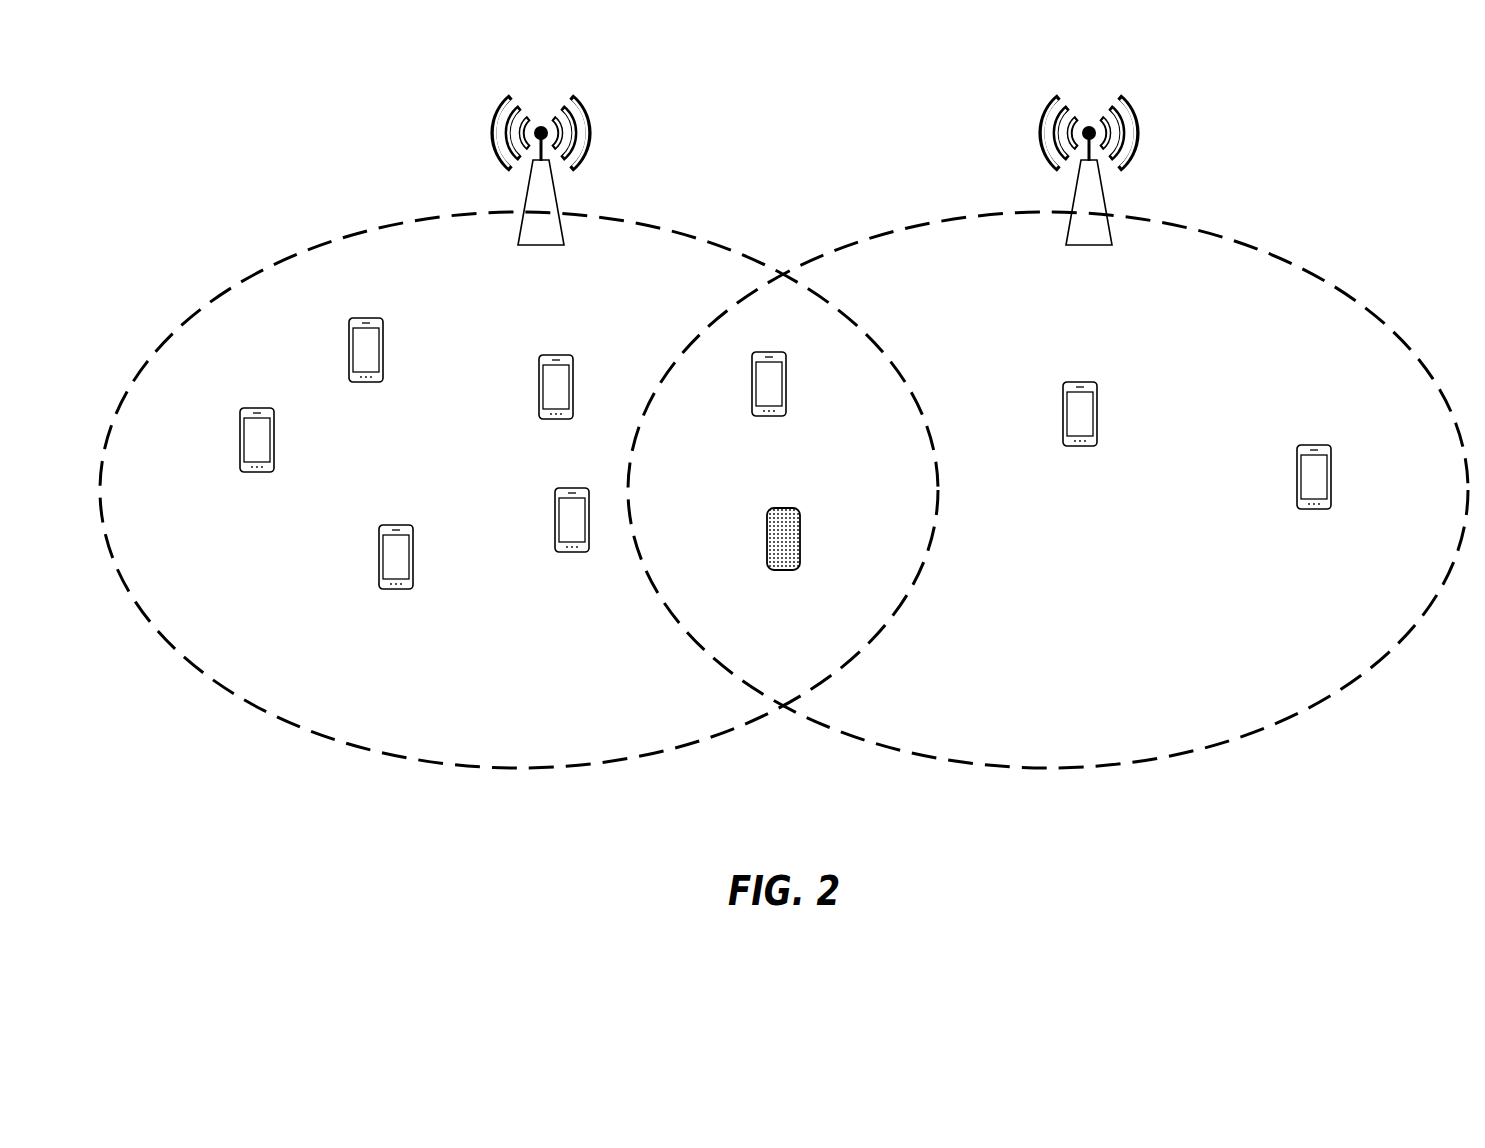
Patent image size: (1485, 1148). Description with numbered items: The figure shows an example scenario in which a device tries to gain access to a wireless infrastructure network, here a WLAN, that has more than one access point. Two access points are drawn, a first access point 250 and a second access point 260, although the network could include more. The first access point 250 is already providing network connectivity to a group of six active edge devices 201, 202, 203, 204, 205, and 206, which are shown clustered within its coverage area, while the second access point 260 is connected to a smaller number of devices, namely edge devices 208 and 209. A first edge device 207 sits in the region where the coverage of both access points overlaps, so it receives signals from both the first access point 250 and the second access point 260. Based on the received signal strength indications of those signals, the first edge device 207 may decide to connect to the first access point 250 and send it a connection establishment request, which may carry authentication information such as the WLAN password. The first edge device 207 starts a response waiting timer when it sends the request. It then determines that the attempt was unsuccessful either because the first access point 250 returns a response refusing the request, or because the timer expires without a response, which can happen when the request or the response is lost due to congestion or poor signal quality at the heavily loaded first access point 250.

The edge device 201 is at (256, 474).
The edge device 202 is at (351, 351).
The edge device 203 is at (540, 393).
The edge device 204 is at (380, 556).
The edge device 205 is at (556, 525).
The edge device 206 is at (768, 418).
The first edge device 207 is at (792, 571).
The edge device 208 is at (1080, 448).
The edge device 209 is at (1298, 491).
The first access point 250 is at (517, 235).
The second access point 260 is at (1066, 235).